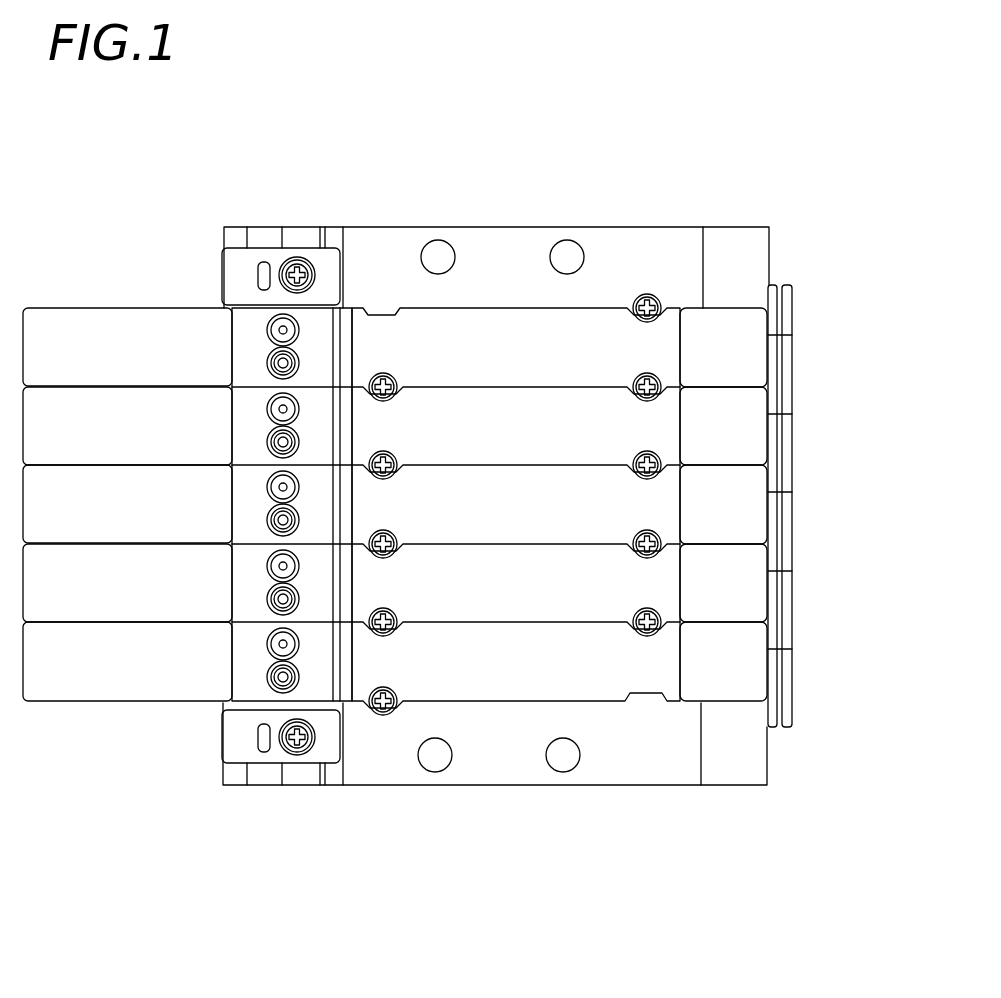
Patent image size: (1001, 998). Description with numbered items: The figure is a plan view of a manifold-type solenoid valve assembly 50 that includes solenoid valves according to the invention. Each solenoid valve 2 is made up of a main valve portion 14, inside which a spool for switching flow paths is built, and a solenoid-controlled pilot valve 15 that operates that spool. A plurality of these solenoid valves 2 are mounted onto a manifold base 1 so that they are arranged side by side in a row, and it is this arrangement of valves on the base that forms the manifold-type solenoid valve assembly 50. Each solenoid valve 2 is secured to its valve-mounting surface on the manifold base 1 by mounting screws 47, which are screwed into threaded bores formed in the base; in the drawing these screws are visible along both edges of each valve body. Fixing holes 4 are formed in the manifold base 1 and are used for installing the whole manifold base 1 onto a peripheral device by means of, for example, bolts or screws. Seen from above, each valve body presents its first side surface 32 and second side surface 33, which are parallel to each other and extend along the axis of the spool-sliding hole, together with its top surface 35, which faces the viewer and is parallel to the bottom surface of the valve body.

The manifold base 1 is at (544, 530).
The solenoid valve 2 is at (217, 616).
The fixing hole 4 is at (567, 255).
The main valve portion 14 is at (408, 705).
The pilot valve 15 is at (165, 705).
The first side surface 32 is at (508, 705).
The second side surface 33 is at (516, 423).
The top surface 35 is at (598, 333).
The mounting screw 47 is at (396, 612).
The manifold-type solenoid valve assembly 50 is at (445, 557).